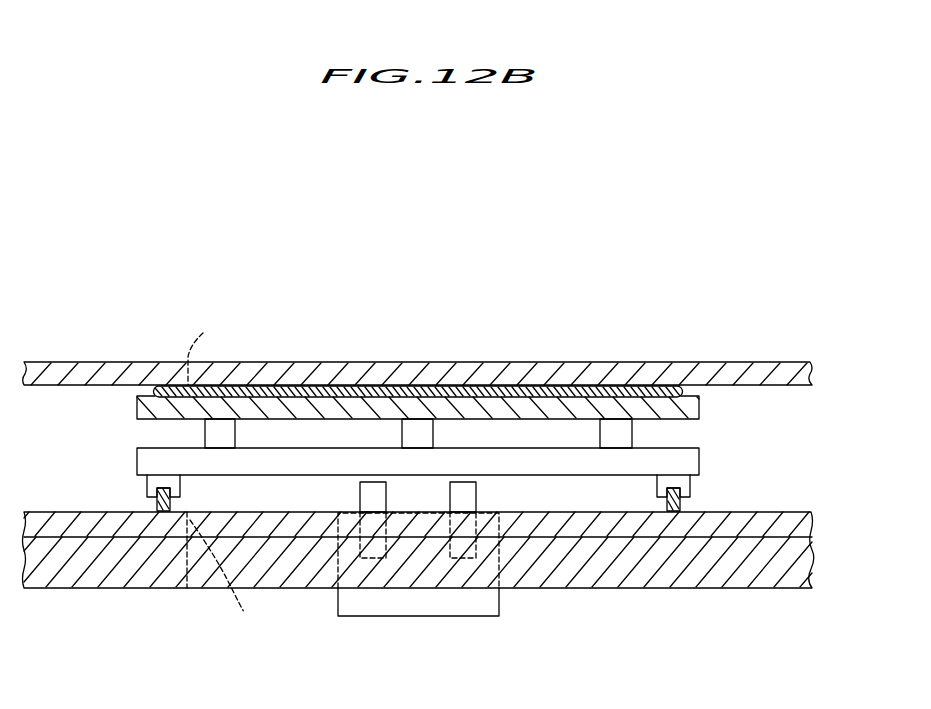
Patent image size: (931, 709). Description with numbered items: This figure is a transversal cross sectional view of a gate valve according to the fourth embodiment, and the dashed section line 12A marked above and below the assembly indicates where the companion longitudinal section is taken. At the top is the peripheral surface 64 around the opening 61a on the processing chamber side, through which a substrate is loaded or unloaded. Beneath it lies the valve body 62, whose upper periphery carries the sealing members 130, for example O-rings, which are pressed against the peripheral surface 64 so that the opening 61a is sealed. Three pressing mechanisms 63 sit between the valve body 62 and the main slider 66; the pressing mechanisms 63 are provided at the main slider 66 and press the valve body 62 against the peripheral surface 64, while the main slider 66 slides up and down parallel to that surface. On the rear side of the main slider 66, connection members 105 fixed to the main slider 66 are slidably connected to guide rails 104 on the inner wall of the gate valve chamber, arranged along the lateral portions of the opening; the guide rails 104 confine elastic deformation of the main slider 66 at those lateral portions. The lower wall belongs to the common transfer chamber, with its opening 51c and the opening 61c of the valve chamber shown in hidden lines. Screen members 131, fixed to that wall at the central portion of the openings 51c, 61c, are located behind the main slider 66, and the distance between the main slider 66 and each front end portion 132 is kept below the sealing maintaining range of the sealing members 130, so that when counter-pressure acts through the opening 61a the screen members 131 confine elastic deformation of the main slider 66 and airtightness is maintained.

The line 12A- 12A is at (460, 345).
The opening 51c is at (187, 588).
The opening 61a is at (205, 348).
The opening 61c is at (227, 578).
The valve body 62 is at (145, 408).
The pressing mechanism 63 is at (198, 436).
The peripheral surface 64 is at (748, 392).
The main slider 66 is at (697, 456).
The guide rail 104 is at (157, 507).
The connection member 105 is at (148, 483).
The sealing member 130 is at (336, 388).
The screen member 131 is at (329, 606).
The front end portion 132 is at (368, 492).